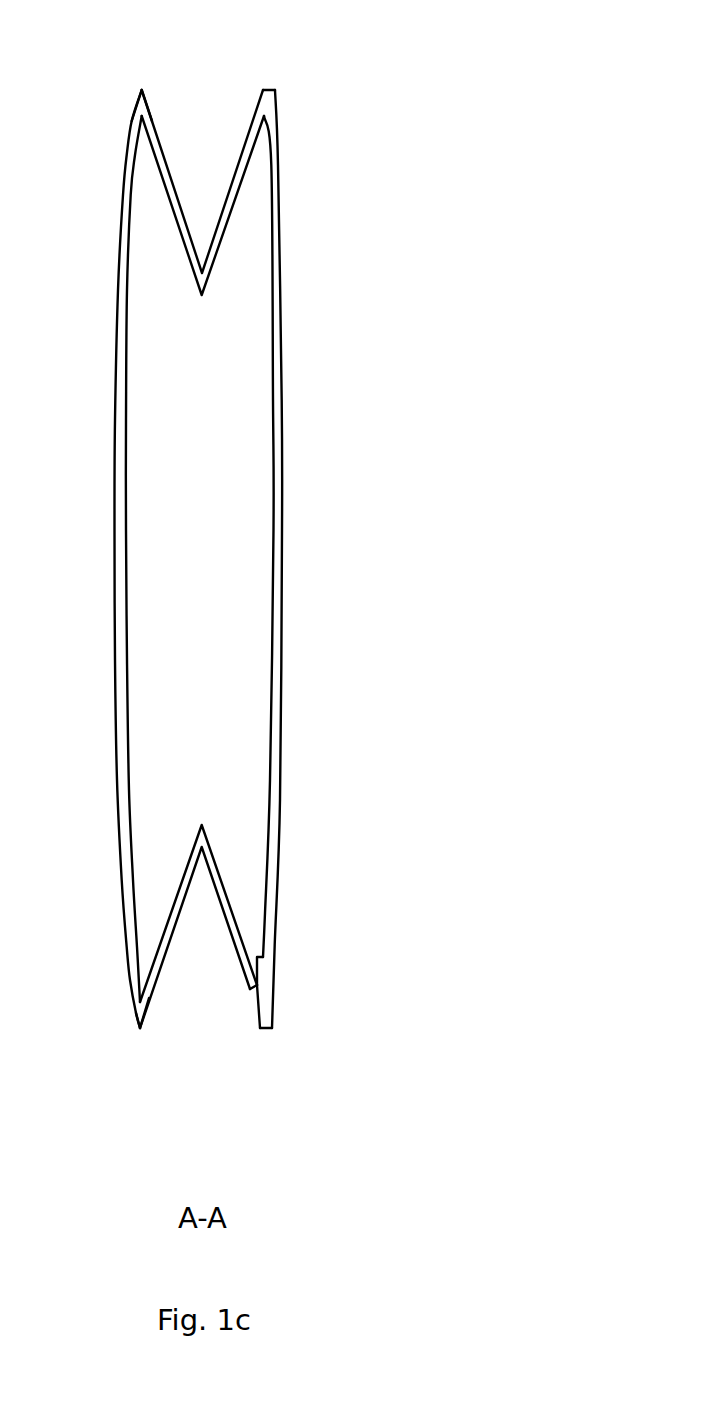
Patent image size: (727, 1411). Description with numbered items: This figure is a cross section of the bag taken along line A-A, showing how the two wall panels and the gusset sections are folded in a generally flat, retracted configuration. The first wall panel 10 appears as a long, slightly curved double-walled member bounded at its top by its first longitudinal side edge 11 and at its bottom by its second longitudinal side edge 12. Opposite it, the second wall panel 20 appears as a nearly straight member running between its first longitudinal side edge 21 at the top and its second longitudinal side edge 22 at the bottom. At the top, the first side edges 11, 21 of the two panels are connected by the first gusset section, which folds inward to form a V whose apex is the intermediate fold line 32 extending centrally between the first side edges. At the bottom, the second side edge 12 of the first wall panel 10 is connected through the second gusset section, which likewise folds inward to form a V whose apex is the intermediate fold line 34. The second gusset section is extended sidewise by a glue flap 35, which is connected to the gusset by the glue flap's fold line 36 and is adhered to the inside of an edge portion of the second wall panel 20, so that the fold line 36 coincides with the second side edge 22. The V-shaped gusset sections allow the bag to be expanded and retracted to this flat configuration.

The first wall panel 10 is at (113, 530).
The first longitudinal side edge of the first wall panel 11 is at (142, 90).
The second longitudinal side edge of the first wall panel 12 is at (140, 1028).
The second wall panel 20 is at (283, 523).
The first longitudinal side edge of the second wall panel 21 is at (275, 90).
The second longitudinal side edge of the second wall panel 22 is at (267, 1028).
The intermediate fold line of the first gusset section 32 is at (203, 295).
The intermediate fold line of the second gusset section 34 is at (202, 825).
The glue flap 35 is at (262, 964).
The fold line of the glue flap 36 is at (250, 989).